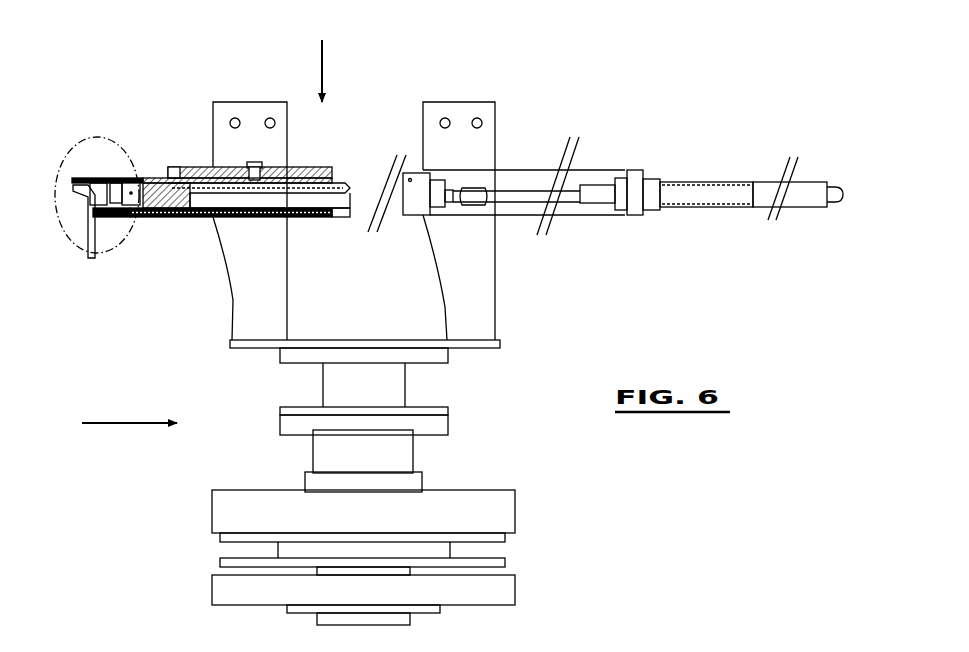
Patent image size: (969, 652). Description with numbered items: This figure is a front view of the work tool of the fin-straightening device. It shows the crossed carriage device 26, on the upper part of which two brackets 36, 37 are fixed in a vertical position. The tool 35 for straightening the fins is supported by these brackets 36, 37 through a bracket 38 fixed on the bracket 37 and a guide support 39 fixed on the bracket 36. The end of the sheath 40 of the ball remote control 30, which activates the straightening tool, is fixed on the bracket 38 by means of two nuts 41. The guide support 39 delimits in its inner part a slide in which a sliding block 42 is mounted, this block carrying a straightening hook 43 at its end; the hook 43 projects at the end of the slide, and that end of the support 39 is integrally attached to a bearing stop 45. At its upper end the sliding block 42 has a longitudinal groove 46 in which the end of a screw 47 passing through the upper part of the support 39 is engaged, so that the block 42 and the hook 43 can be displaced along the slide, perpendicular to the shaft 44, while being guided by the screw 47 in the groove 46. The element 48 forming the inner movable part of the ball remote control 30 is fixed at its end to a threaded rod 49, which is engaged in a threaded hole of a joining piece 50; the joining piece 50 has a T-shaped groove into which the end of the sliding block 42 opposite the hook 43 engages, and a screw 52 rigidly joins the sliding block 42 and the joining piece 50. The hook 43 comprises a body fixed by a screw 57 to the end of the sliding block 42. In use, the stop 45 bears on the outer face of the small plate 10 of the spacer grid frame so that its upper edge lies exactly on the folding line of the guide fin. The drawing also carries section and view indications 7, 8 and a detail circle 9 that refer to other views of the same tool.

The section line 7- 7 is at (318, 54).
The view direction arrow 8 is at (119, 417).
The detail circle 9 is at (106, 140).
The small plate 10 is at (90, 258).
The crossed carriage device 26 is at (515, 505).
The ball remote control 30 is at (765, 185).
The tool 35 is at (572, 160).
The bracket 36 is at (233, 300).
The bracket 37 is at (497, 307).
The bracket 38 is at (600, 172).
The guide support 39 is at (180, 170).
The sheath 40 is at (710, 207).
The nuts 41 is at (645, 215).
The sliding block 42 is at (365, 185).
The straightening hook 43 is at (90, 205).
The shaft 44 is at (405, 390).
The bearing stop 45 is at (96, 225).
The longitudinal groove 46 is at (205, 167).
The screw 47 is at (253, 160).
The element forming the inner movable part 48 is at (518, 205).
The threaded rod 49 is at (464, 205).
The joining piece 50 is at (415, 205).
The screw 52 is at (410, 180).
The screw 57 is at (118, 210).